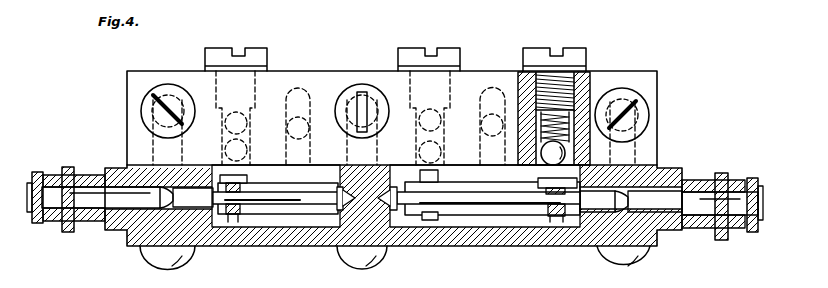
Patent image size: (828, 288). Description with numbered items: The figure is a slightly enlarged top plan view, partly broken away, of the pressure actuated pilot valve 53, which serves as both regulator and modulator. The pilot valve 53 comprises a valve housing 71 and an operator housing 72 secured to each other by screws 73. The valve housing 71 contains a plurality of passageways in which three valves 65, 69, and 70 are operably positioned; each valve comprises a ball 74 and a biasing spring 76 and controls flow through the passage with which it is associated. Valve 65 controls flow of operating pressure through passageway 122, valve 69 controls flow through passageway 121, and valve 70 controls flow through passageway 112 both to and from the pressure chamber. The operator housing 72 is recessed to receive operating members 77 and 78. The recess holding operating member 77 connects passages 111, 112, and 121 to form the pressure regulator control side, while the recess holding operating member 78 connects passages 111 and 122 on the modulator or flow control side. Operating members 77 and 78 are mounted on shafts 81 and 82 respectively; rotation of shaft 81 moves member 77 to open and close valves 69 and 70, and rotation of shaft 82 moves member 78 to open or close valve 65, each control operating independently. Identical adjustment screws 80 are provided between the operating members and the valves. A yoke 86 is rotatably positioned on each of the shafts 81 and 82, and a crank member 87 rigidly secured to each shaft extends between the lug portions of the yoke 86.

The pressure actuated pilot valve 53 is at (462, 254).
The valve 65 is at (199, 63).
The valve 69 is at (522, 64).
The valve 70 is at (392, 64).
The valve housing 71 is at (647, 86).
The operator housing 72 is at (540, 243).
The screws 73 is at (156, 254).
The ball 74 is at (538, 151).
The biasing spring 76 is at (575, 153).
The operating member 77 is at (505, 200).
The operating member 78 is at (300, 200).
The screws 80 is at (237, 214).
The shaft 81 is at (697, 210).
The shaft 82 is at (90, 200).
The yoke 86 is at (68, 168).
The crank member 87 is at (35, 172).
The passage 111 is at (311, 128).
The passageway 112 is at (447, 123).
The passageway 121 is at (576, 110).
The passageway 122 is at (250, 128).